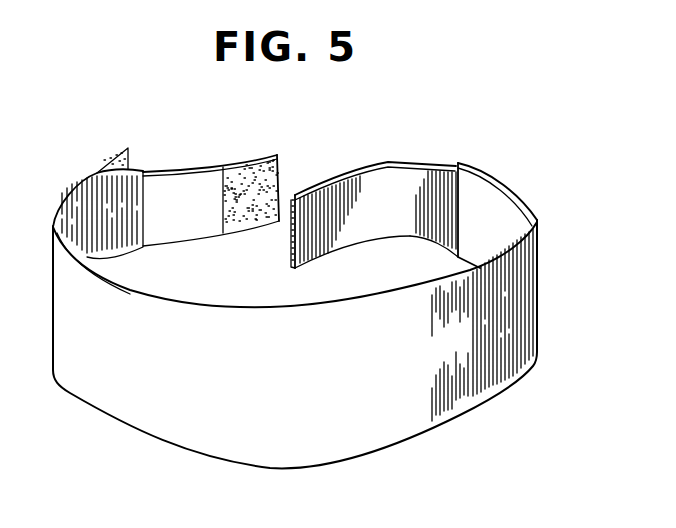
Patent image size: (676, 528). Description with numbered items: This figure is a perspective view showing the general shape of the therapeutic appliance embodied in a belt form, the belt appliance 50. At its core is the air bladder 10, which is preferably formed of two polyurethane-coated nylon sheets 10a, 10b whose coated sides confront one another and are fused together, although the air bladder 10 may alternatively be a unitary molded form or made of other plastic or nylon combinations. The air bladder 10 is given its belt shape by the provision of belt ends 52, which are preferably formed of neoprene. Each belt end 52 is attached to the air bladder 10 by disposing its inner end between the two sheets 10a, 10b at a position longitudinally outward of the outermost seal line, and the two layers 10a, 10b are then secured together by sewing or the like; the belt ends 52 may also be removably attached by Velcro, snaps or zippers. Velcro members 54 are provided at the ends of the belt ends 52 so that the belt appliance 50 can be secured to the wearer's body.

The air bladder 10 is at (390, 440).
The polyurethane-coated nylon sheet 10a is at (118, 152).
The polyurethane-coated nylon sheet 10b is at (143, 171).
The belt appliance 50 is at (551, 312).
The belt end 52 is at (387, 176).
The Velcro member 54 is at (305, 192).